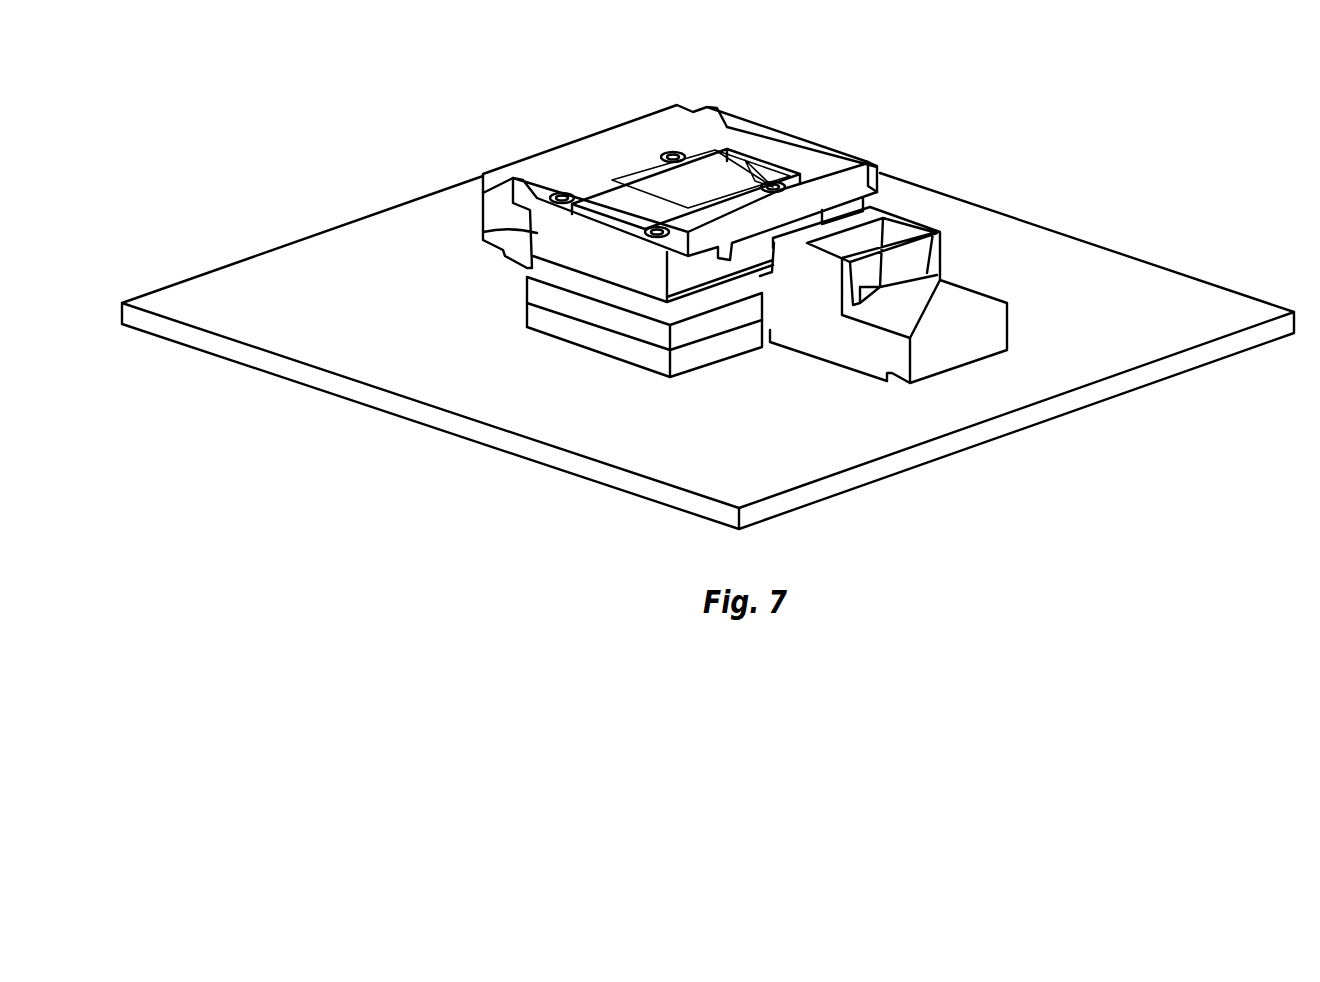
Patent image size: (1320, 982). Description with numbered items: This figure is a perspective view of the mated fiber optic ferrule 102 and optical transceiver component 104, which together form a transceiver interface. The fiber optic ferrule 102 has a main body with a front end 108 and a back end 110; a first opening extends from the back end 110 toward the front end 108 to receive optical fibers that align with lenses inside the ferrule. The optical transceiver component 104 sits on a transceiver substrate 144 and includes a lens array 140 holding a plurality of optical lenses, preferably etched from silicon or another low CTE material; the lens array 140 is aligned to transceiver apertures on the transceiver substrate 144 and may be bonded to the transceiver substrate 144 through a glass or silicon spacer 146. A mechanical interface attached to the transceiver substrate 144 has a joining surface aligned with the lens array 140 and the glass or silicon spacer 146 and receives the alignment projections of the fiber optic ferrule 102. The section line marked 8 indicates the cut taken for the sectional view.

The back end 110 is at (750, 130).
The fiber optic ferrule 102 is at (882, 173).
The front end 108 is at (483, 233).
The optical transceiver component 104 is at (982, 300).
The transceiver substrate 144 is at (1224, 304).
The lens array 140 is at (690, 328).
The glass or silicon spacer 146 is at (738, 342).
The section line 8- 8 is at (445, 253).